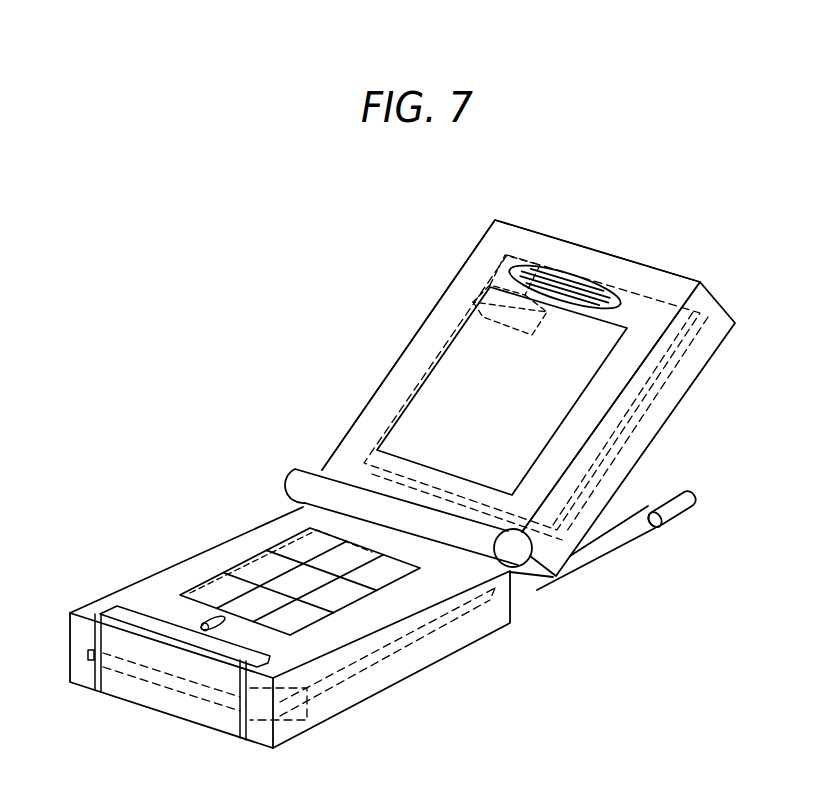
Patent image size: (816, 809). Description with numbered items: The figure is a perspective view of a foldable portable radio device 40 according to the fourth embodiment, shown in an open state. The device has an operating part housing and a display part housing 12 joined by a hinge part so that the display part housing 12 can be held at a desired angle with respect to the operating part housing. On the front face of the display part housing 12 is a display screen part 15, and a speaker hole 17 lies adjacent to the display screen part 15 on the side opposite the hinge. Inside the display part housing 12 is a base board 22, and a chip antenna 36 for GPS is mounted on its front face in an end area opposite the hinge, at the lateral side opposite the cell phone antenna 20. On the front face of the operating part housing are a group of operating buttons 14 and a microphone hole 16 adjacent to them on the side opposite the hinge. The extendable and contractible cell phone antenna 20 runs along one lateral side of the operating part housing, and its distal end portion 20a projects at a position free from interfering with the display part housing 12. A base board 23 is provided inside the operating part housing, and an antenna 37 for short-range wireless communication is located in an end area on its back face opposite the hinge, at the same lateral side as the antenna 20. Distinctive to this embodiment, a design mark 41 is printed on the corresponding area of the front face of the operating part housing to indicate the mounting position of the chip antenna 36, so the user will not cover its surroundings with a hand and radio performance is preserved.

The portable radio device 40 is at (530, 223).
The display part housing 12 is at (437, 333).
The display screen part 15 is at (433, 400).
The speaker hole 17 is at (580, 291).
The chip antenna 36 is at (474, 318).
The base board 22 is at (670, 380).
The group of operating buttons 14 is at (284, 543).
The microphone hole 16 is at (203, 628).
The cell phone antenna 20 is at (588, 557).
The distal end portion 20a is at (673, 510).
The base board 23 is at (436, 627).
The design mark 41 is at (178, 706).
The antenna for short-range wireless communication 37 is at (307, 708).